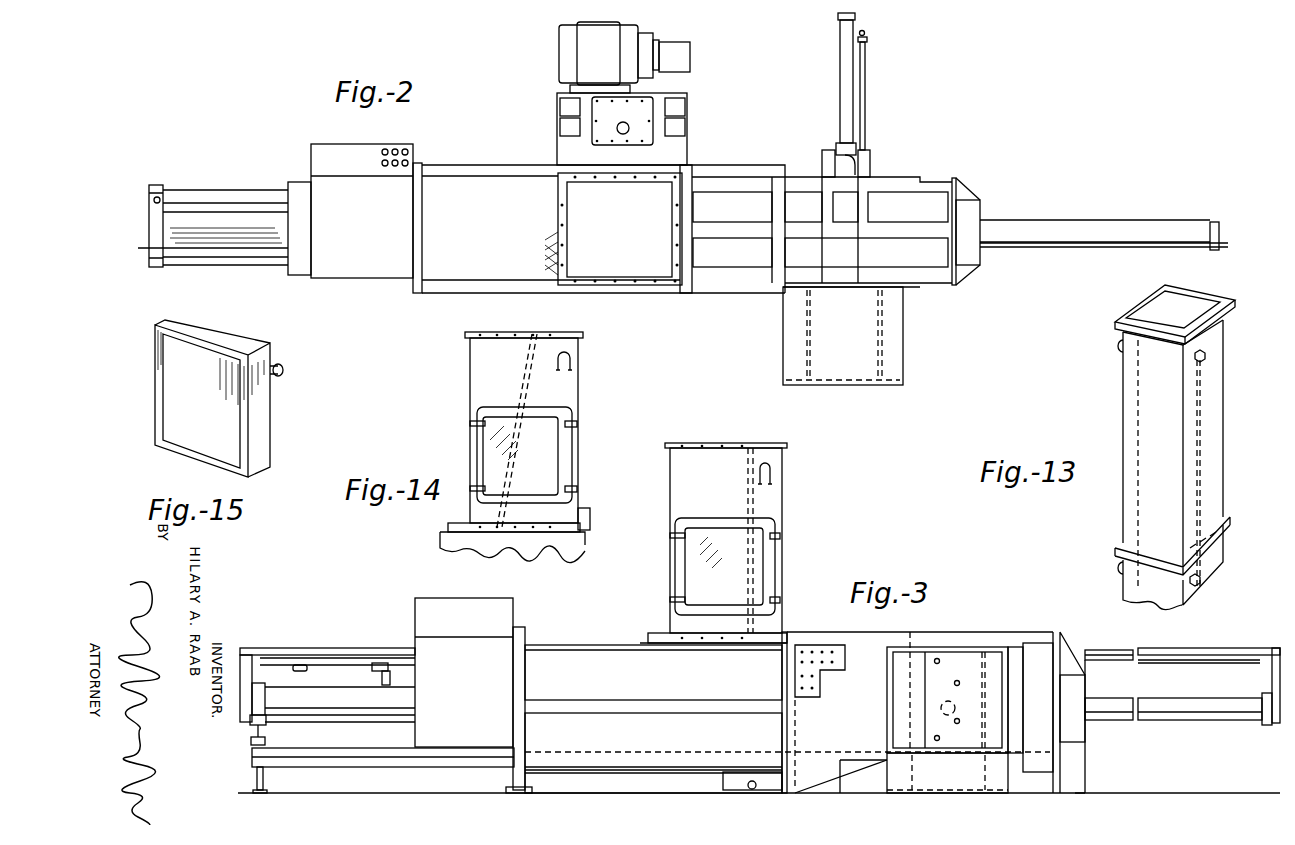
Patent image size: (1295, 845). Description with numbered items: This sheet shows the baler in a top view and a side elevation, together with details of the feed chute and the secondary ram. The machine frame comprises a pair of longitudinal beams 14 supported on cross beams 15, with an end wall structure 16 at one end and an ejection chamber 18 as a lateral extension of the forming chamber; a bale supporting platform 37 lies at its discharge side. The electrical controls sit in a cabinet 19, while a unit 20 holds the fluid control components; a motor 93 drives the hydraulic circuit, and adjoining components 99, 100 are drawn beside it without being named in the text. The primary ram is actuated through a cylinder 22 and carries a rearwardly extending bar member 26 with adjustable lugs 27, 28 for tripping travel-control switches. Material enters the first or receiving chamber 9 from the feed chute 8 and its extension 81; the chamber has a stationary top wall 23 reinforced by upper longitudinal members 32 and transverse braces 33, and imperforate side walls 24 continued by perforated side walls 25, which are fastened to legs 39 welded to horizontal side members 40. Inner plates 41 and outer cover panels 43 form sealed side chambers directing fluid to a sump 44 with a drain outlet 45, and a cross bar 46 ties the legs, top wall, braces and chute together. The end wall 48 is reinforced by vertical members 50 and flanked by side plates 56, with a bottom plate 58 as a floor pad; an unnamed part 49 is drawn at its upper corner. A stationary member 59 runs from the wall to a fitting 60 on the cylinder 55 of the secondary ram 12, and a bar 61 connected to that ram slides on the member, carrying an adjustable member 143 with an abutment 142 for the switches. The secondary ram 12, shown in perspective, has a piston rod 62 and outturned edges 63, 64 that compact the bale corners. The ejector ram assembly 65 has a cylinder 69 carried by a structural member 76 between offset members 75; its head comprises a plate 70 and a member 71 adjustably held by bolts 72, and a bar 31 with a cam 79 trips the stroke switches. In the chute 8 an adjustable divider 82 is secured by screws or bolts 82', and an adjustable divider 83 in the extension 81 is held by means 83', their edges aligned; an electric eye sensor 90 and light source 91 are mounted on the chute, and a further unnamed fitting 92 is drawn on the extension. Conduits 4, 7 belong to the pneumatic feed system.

In FIG. 2, the conduit 4 is at (134, 228).
In FIG. 2, the conduit 7 is at (746, 150).
In FIG. 2, the feed chute 8 is at (980, 160).
In FIG. 3, the feed chute 8 is at (782, 499).
In FIG. 14, the feed chute 8 is at (578, 449).
In FIG. 13, the feed chute 8 is at (1222, 550).
In FIG. 2, the first or receiving chamber 9 is at (908, 38).
In FIG. 15, the secondary ram 12 is at (270, 418).
In FIG. 3, the longitudinal beams 14 is at (384, 765).
In FIG. 3, the cross beams 15 is at (264, 780).
In FIG. 2, the end wall structure 16 is at (948, 250).
In FIG. 3, the end wall structure 16 is at (1080, 780).
In FIG. 2, the ejection chamber 18 is at (868, 246).
In FIG. 3, the ejection chamber 18 is at (908, 635).
In FIG. 2, the cabinet 19 is at (361, 150).
In FIG. 3, the cabinet 19 is at (505, 610).
In FIG. 2, the unit 20 is at (681, 91).
In FIG. 2, the cylinder 22 is at (244, 214).
In FIG. 3, the cylinder 22 is at (366, 716).
In FIG. 2, the stationary top wall 23 is at (958, 186).
In FIG. 3, the imperforate side walls 24 is at (573, 655).
In FIG. 3, the perforated side walls 25 is at (803, 650).
In FIG. 3, the bar member 26 is at (337, 668).
In FIG. 3, the lug 27 is at (372, 670).
In FIG. 3, the lug 28 is at (300, 670).
In FIG. 2, the bar 31 is at (865, 88).
In FIG. 2, the upper longitudinal members 32 is at (725, 190).
In FIG. 3, the upper longitudinal members 32 is at (934, 634).
In FIG. 2, the transverse braces 33 is at (680, 246).
In FIG. 3, the transverse braces 33 is at (874, 679).
In FIG. 2, the bale supporting platform 37 is at (898, 353).
In FIG. 3, the bale supporting platform 37 is at (1000, 785).
In FIG. 3, the legs 39 is at (795, 793).
In FIG. 2, the horizontal side members 40 is at (485, 176).
In FIG. 3, the horizontal side members 40 is at (622, 648).
In FIG. 3, the inner plates 41 is at (819, 682).
In FIG. 2, the outer cover panels 43 is at (770, 290).
In FIG. 3, the outer cover panels 43 is at (800, 732).
In FIG. 3, the sump 44 is at (722, 783).
In FIG. 3, the drain outlet 45 is at (525, 680).
In FIG. 3, the cross bar 46 is at (787, 632).
In FIG. 2, the end wall 48 is at (966, 286).
In FIG. 3, the end wall 48 is at (1062, 632).
In FIG. 2, the conical end 49 is at (980, 196).
In FIG. 3, the conical end 49 is at (1084, 793).
In FIG. 2, the vertical members 50 is at (980, 210).
In FIG. 3, the vertical members 50 is at (1080, 742).
In FIG. 2, the cylinder 55 is at (1152, 222).
In FIG. 3, the cylinder 55 is at (1232, 716).
In FIG. 3, the side plates 56 is at (1060, 764).
In FIG. 3, the bottom plate 58 is at (1052, 795).
In FIG. 2, the stationary member 59 is at (1185, 246).
In FIG. 3, the stationary member 59 is at (1233, 648).
In FIG. 3, the fitting 60 is at (1265, 682).
In FIG. 3, the bar 61 is at (1192, 662).
In FIG. 15, the piston rod 62 is at (281, 379).
In FIG. 15, the outturned edge 63 is at (178, 338).
In FIG. 15, the outturned edge 64 is at (156, 418).
In FIG. 2, the ejector ram assembly 65 is at (892, 120).
In FIG. 2, the cylinder 69 is at (840, 92).
In FIG. 3, the plate 70 is at (900, 722).
In FIG. 3, the member 71 is at (925, 697).
In FIG. 3, the bolts 72 is at (955, 718).
In FIG. 2, the offset members 75 is at (822, 160).
In FIG. 2, the structural member 76 is at (862, 174).
In FIG. 2, the cam 79 is at (866, 42).
In FIG. 13, the chute extension 81 is at (1223, 402).
In FIG. 3, the adjustable divider 82 is at (731, 540).
In FIG. 14, the adjustable divider 82 is at (512, 430).
In FIG. 3, the screws or bolts 82' is at (747, 532).
In FIG. 14, the screws or bolts 82' is at (528, 419).
In FIG. 13, the adjustable divider 83 is at (1194, 445).
In FIG. 13, the securing means 83' is at (1184, 539).
In FIG. 13, the electric eye sensor 90 is at (1202, 580).
In FIG. 3, the light source 91 is at (770, 474).
In FIG. 14, the light source 91 is at (570, 364).
In FIG. 13, the light source 91 is at (1120, 568).
In FIG. 13, the nut 92 is at (1118, 348).
In FIG. 2, the motor 93 is at (559, 52).
In FIG. 2, the coupling 99 is at (685, 44).
In FIG. 2, the gear box 100 is at (690, 52).
In FIG. 3, the adjustable abutment 142 is at (1084, 664).
In FIG. 3, the adjustable member 143 is at (1124, 662).